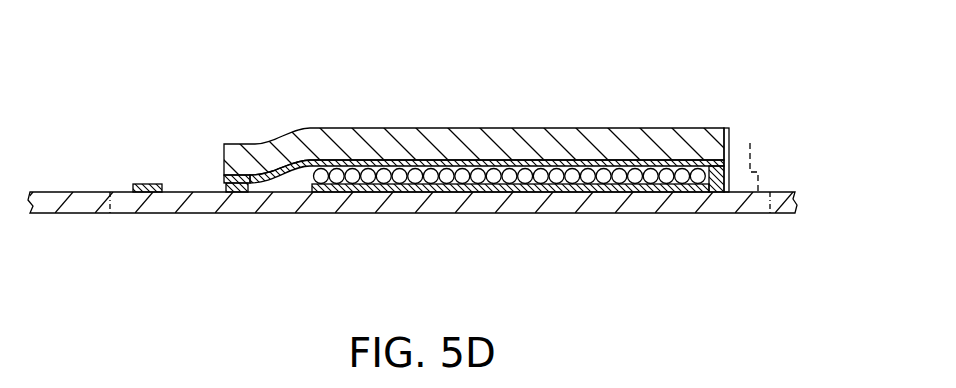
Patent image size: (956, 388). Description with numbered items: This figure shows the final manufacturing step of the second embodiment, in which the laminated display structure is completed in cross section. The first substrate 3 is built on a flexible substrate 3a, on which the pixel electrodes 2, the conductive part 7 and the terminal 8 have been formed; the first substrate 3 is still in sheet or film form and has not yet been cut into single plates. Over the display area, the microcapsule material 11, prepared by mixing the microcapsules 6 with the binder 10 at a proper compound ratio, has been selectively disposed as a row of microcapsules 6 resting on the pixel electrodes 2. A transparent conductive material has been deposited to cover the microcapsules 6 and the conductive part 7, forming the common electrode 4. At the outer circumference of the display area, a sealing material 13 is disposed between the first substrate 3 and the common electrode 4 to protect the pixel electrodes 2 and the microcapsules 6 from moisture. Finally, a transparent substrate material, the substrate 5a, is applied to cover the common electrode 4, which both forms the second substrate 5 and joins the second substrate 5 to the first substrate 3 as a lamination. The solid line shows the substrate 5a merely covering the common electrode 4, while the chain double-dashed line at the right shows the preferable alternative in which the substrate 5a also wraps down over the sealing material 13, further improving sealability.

The pixel electrodes 2 is at (452, 188).
The first substrate 3 is at (277, 213).
The flexible substrate 3a is at (212, 201).
The common electrode 4 is at (462, 132).
The second substrate 5 is at (455, 66).
The substrate 5a is at (541, 136).
The microcapsules 6 is at (529, 190).
The conductive part 7 is at (224, 190).
The terminal 8 is at (148, 184).
The binder 10 is at (500, 272).
The microcapsule material 11 is at (510, 248).
The sealing material 13 is at (716, 192).